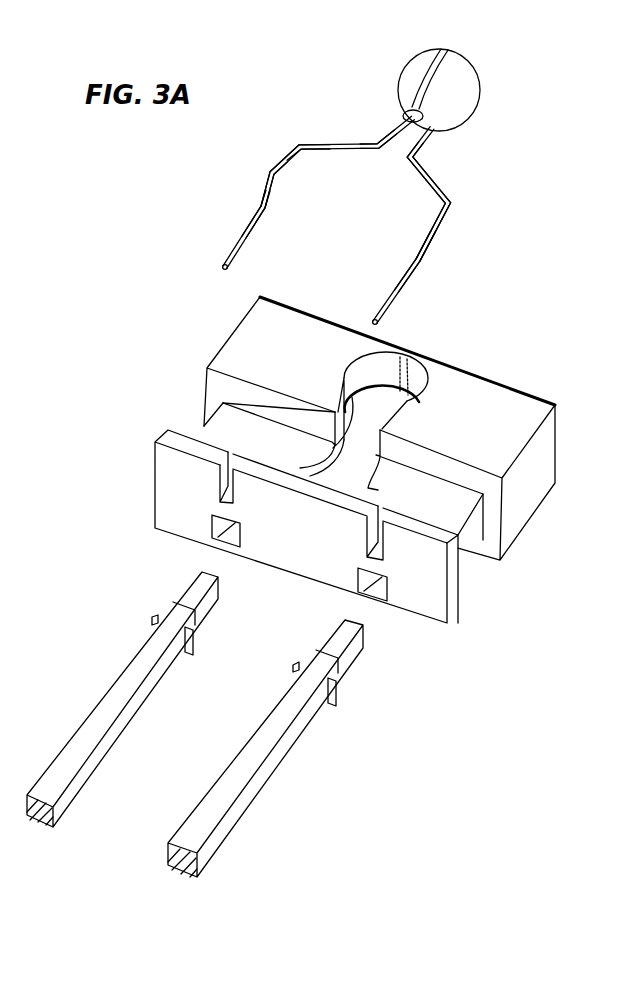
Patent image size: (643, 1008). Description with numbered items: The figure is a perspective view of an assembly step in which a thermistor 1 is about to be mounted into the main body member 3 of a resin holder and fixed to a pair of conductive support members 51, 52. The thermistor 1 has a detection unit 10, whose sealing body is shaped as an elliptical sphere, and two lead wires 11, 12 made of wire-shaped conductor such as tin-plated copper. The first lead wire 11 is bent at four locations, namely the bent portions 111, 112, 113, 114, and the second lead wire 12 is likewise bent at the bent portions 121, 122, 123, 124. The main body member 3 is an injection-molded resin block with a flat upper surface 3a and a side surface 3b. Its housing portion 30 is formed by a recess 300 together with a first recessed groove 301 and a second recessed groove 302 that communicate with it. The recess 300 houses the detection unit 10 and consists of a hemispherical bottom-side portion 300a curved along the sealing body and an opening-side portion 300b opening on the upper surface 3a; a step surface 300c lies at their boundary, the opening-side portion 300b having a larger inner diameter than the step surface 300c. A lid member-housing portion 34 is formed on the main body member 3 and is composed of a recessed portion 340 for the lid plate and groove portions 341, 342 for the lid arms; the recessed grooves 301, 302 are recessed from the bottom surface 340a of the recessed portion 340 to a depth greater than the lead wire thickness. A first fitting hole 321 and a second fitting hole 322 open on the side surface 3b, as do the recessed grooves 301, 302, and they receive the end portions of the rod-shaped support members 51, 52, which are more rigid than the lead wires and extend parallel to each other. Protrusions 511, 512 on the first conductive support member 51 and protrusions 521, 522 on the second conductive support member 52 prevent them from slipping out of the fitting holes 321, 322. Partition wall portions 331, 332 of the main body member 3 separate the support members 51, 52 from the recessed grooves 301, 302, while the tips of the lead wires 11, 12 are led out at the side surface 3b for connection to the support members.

The thermistor 1 is at (490, 83).
The detection unit 10 is at (415, 78).
The first lead wire 11 is at (345, 152).
The bent portion 111 is at (378, 135).
The bent portion 112 is at (302, 143).
The bent portion 113 is at (277, 173).
The bent portion 114 is at (262, 207).
The second lead wire 12 is at (450, 220).
The bent portion 121 is at (418, 157).
The bent portion 122 is at (453, 203).
The bent portion 123 is at (427, 227).
The bent portion 124 is at (418, 260).
The main body member 3 is at (238, 323).
The upper surface 3a is at (297, 328).
The side surface 3b is at (295, 543).
The housing portion 30 is at (360, 353).
The recess 300 is at (515, 305).
The bottom-side portion 300a is at (388, 398).
The opening-side portion 300b is at (387, 363).
The step surface 300c is at (352, 397).
The first recessed groove 301 is at (302, 470).
The second recessed groove 302 is at (367, 487).
The lid member-housing portion 34 is at (200, 405).
The recessed portion 340 is at (407, 453).
The bottom surface 340a is at (292, 437).
The groove portion 341 is at (193, 430).
The groove portion 342 is at (482, 567).
The first fitting hole 321 is at (228, 538).
The second fitting hole 322 is at (373, 583).
The partition wall portion 331 is at (225, 508).
The partition wall portion 332 is at (370, 563).
The first conductive support member 51 is at (90, 720).
The protrusion 511 is at (157, 615).
The protrusion 512 is at (192, 642).
The second conductive support member 52 is at (218, 782).
The protrusion 521 is at (298, 668).
The protrusion 522 is at (336, 697).